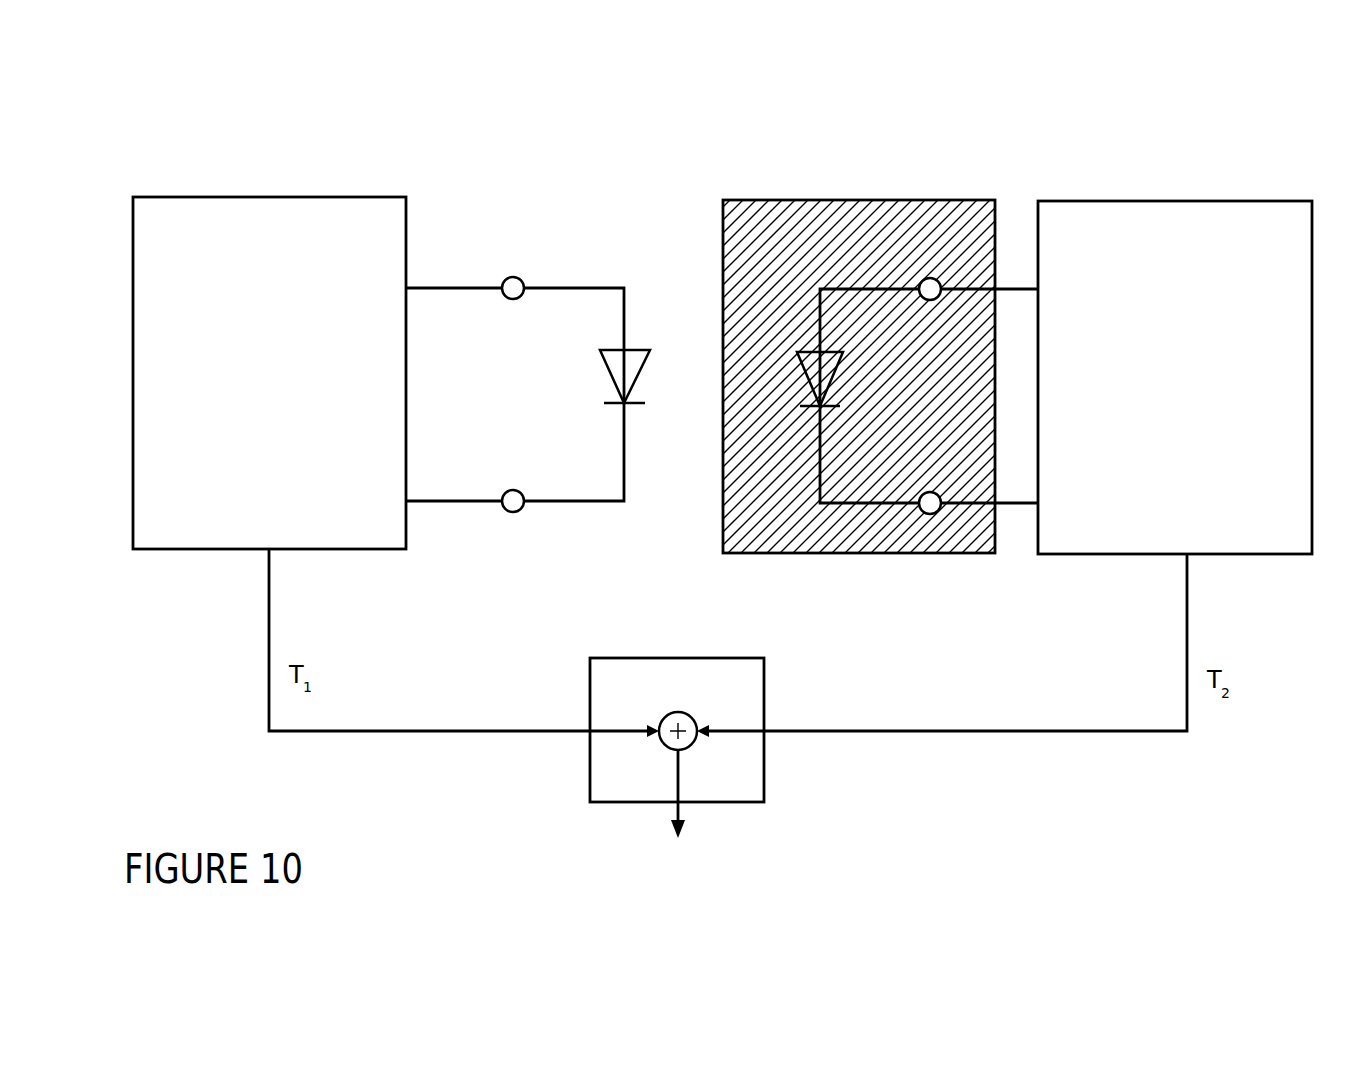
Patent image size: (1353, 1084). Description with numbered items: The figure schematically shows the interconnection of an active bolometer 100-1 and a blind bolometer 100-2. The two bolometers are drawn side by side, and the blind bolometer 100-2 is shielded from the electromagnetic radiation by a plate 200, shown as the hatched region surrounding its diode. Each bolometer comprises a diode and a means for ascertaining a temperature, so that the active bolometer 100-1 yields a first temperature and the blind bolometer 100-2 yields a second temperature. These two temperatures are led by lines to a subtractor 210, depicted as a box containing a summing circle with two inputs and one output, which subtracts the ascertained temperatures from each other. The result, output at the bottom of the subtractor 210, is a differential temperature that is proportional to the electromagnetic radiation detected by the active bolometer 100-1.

The active bolometer 100-1 is at (395, 166).
The blind bolometer 100-2 is at (1031, 167).
The plate 200 is at (893, 554).
The subtractor 210 is at (680, 657).